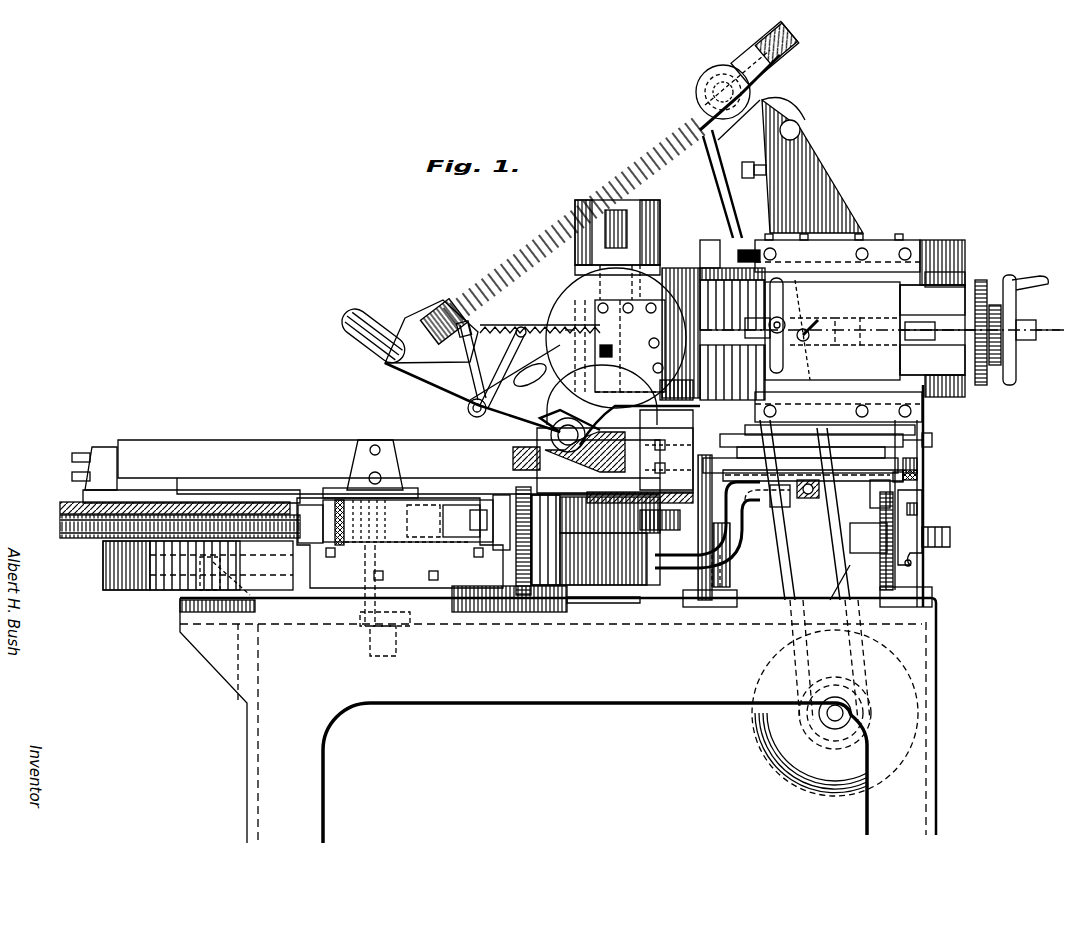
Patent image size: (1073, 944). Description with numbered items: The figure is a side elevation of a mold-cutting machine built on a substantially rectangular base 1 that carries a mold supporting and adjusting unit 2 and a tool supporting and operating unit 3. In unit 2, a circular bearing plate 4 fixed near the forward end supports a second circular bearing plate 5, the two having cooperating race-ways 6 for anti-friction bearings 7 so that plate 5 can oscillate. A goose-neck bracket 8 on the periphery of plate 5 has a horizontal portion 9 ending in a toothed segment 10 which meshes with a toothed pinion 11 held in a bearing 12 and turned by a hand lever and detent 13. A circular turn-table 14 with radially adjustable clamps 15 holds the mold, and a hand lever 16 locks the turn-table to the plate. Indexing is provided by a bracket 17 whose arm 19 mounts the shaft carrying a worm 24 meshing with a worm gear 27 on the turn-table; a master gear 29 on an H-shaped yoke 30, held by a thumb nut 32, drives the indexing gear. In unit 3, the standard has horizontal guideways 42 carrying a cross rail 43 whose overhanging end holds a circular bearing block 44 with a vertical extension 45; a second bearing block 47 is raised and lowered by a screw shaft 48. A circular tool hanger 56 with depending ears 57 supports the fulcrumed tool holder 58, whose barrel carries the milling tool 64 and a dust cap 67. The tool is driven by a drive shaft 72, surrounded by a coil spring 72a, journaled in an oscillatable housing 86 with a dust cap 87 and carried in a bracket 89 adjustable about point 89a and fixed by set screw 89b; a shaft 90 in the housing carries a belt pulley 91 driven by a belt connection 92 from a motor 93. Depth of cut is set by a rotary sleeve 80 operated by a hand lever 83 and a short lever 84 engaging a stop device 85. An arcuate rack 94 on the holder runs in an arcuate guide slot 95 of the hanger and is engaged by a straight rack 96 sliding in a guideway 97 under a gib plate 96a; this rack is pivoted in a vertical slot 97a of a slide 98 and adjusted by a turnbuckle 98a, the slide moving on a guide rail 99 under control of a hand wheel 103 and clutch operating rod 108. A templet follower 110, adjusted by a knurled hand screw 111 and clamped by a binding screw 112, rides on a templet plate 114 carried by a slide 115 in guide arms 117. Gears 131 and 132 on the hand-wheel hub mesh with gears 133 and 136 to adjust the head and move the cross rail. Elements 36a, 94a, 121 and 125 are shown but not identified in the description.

The base 1 is at (558, 714).
The mold supporting and adjusting unit 2 is at (427, 410).
The tool supporting and operating unit 3 is at (712, 403).
The circular bearing plate 4 is at (275, 622).
The second circular bearing plate 5 is at (103, 572).
The race-ways 6 is at (215, 560).
The anti-friction bearings 7 is at (213, 562).
The goose-neck bracket 8 is at (735, 535).
The horizontal portion 9 is at (780, 498).
The toothed segment 10 is at (855, 495).
The toothed pinion 11 is at (870, 512).
The bearing 12 is at (835, 578).
The hand lever and detent 13 is at (925, 502).
The circular turn-table 14 is at (60, 508).
The radially adjustable clamps 15 is at (70, 470).
The hand lever 16 is at (618, 603).
The bracket 17 is at (418, 600).
The horizontal arm 19 is at (672, 138).
The worm 24 is at (407, 561).
The worm gear 27 is at (60, 528).
The master gear 29 is at (505, 577).
The H-shaped yoke 30 is at (437, 505).
The thumb nut 32 is at (404, 565).
The plate 36a is at (598, 312).
The horizontal guideways 42 is at (920, 245).
The cross rail 43 is at (668, 240).
The circular bearing block 44 is at (903, 478).
The vertical extension 45 is at (662, 220).
The second bearing block 47 is at (575, 210).
The screw shaft 48 is at (655, 197).
The circular tool hanger 56 is at (575, 275).
The depending ears 57 is at (606, 468).
The tool holder 58 is at (398, 352).
The milling tool 64 is at (580, 482).
The dust cap 67 is at (345, 314).
The drive shaft 72 is at (528, 260).
The coil spring 72a is at (650, 182).
The rotary sleeve 80 is at (400, 372).
The hand lever 83 is at (540, 325).
The short lever 84 is at (460, 390).
The stop device 85 is at (503, 367).
The oscillatable housing 86 is at (700, 88).
The dust cap 87 is at (790, 62).
The bracket 89 is at (800, 115).
The point 89a is at (800, 130).
The set screw 89b is at (748, 150).
The shaft 90 is at (760, 100).
The belt pulley 91 is at (705, 75).
The belt connection 92 is at (775, 580).
The motor 93 is at (835, 698).
The arcuate rack 94 is at (515, 372).
The cam disc 94a is at (610, 372).
The arcuate guide slot 95 is at (605, 420).
The straight rack 96 is at (562, 310).
The gib plate 96a is at (620, 338).
The second guideway 97 is at (643, 275).
The vertical slot 97a is at (797, 345).
The slide 98 is at (882, 331).
The turnbuckle 98a is at (770, 305).
The guide rail 99 is at (958, 285).
The hand wheel 103 is at (1016, 370).
The clutch operating rod 108 is at (1035, 322).
The templet follower 110 is at (810, 394).
The knurled hand screw 111 is at (810, 260).
The binding screw 112 is at (905, 343).
The templet plate 114 is at (915, 430).
The horizontally disposed slide 115 is at (932, 440).
The horizontal guide arms 117 is at (917, 448).
The plate 121 is at (811, 452).
The bar 125 is at (800, 492).
The gear 131 is at (965, 345).
The gear 132 is at (995, 365).
The gear 133 is at (965, 315).
The gear 136 is at (982, 280).